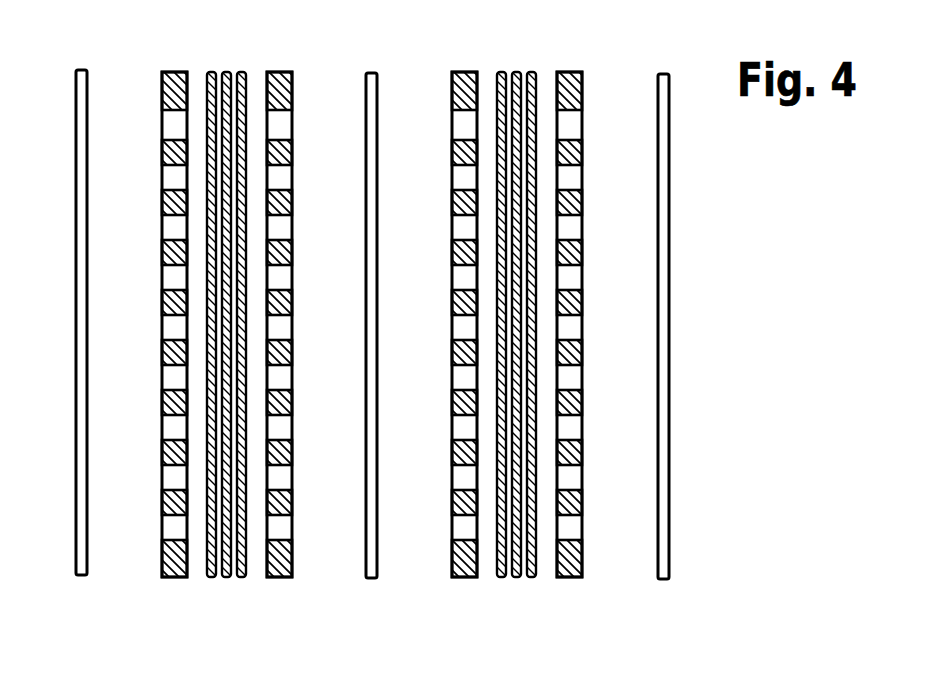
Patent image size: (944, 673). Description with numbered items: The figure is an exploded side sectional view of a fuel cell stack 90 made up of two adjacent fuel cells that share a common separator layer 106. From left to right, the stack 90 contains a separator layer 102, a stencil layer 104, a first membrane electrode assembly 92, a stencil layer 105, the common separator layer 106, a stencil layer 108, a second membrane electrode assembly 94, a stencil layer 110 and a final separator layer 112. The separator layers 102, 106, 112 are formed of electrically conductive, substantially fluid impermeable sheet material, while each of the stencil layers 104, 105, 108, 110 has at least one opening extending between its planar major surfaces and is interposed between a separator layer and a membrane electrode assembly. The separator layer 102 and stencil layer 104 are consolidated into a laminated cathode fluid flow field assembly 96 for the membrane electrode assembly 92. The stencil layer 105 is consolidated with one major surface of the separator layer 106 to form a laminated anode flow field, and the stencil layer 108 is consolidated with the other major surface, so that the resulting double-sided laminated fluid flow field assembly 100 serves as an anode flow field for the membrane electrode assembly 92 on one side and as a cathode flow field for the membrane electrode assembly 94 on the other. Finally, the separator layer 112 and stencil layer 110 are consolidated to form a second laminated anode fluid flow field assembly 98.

The fuel cell stack 90 is at (688, 245).
The membrane electrode assembly 92 is at (257, 590).
The membrane electrode assembly 94 is at (548, 590).
The laminated cathode fluid flow field assembly 96 is at (192, 590).
The second laminated anode fluid flow field assembly 98 is at (688, 590).
The double-sided laminated fluid flow field assembly 100 is at (483, 590).
The separator layer 102 is at (80, 70).
The stencil layer 104 is at (193, 22).
The stencil layer 105 is at (308, 23).
The common separator layer 106 is at (370, 73).
The stencil layer 108 is at (465, 73).
The stencil layer 110 is at (570, 73).
The separator layer 112 is at (665, 73).